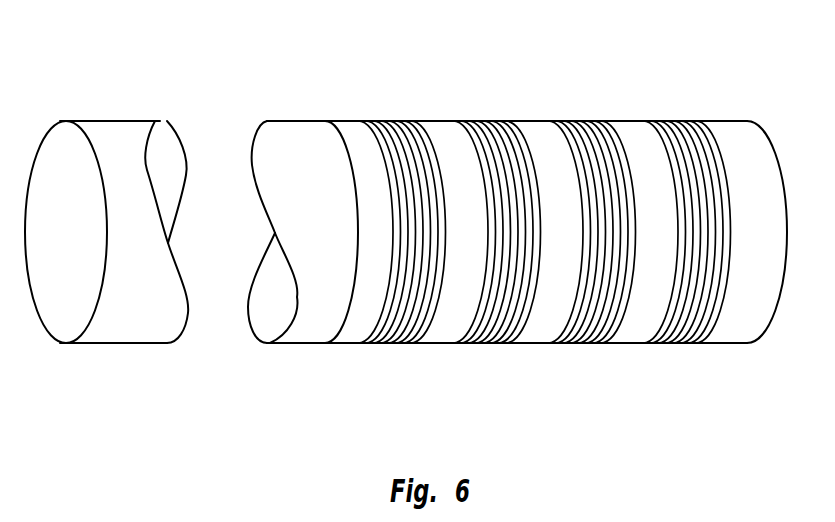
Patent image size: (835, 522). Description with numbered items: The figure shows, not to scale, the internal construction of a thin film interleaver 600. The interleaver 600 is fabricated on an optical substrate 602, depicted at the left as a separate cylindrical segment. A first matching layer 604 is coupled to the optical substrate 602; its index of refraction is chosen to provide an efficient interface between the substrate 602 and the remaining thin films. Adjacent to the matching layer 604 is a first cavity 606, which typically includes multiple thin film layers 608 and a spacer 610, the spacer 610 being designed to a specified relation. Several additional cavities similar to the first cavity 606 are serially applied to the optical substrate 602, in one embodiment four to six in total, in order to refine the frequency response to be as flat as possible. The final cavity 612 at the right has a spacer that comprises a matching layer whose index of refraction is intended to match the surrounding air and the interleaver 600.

The thin film interleaver 600 is at (600, 88).
The optical substrate 602 is at (322, 348).
The first matching layer 604 is at (340, 338).
The cavity 606 is at (375, 224).
The thin film layers 608 is at (385, 120).
The spacer 610 is at (437, 130).
The final cavity 612 is at (737, 348).